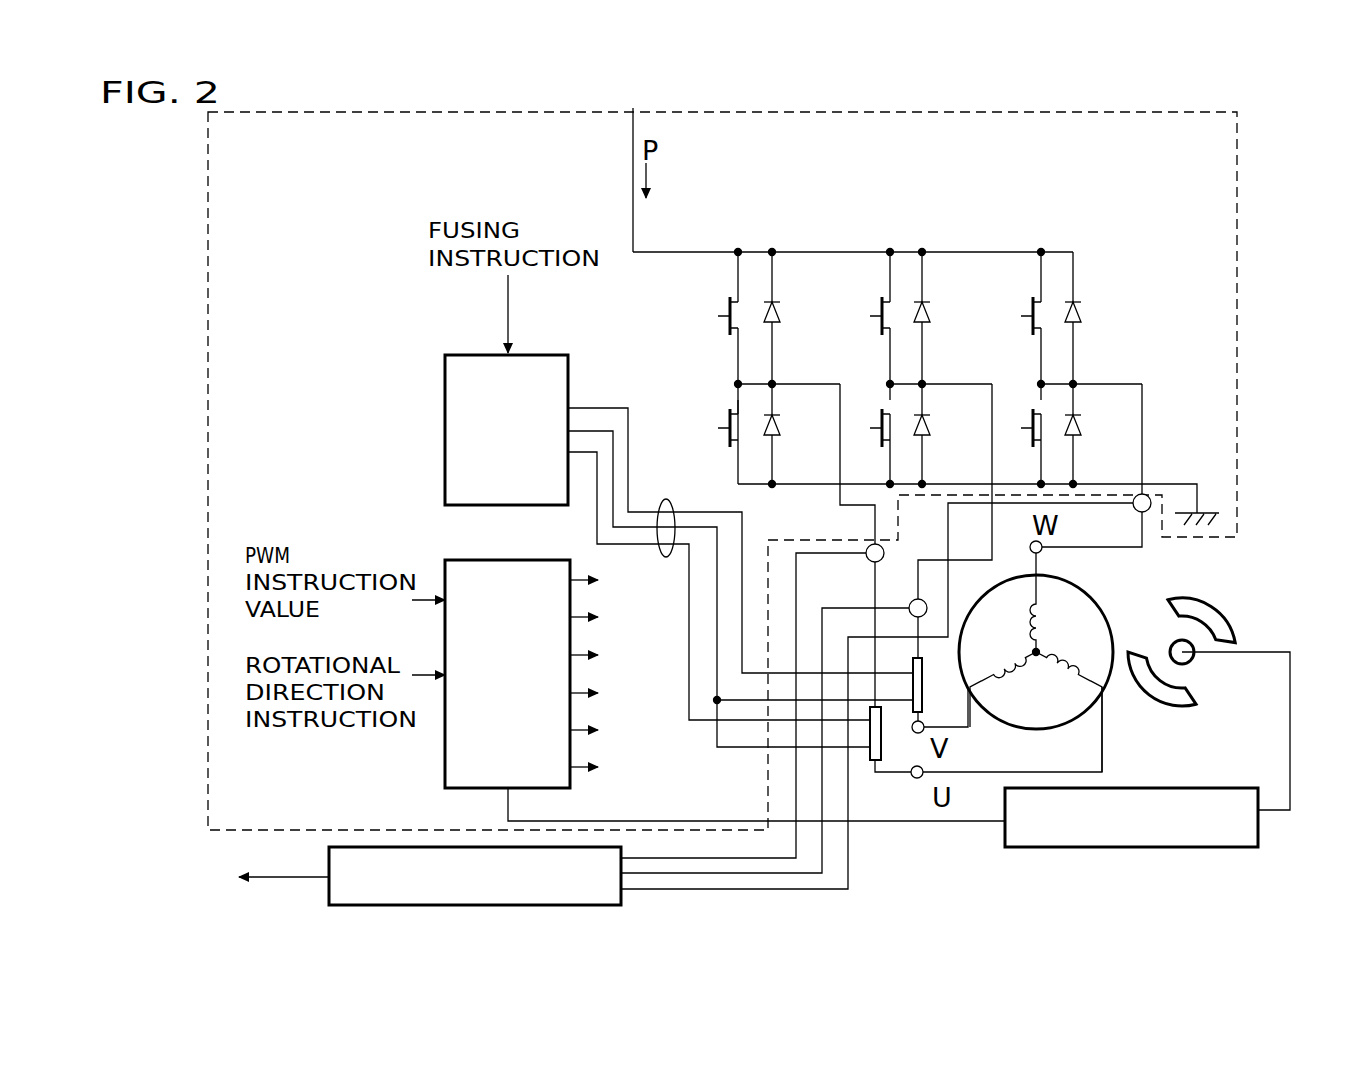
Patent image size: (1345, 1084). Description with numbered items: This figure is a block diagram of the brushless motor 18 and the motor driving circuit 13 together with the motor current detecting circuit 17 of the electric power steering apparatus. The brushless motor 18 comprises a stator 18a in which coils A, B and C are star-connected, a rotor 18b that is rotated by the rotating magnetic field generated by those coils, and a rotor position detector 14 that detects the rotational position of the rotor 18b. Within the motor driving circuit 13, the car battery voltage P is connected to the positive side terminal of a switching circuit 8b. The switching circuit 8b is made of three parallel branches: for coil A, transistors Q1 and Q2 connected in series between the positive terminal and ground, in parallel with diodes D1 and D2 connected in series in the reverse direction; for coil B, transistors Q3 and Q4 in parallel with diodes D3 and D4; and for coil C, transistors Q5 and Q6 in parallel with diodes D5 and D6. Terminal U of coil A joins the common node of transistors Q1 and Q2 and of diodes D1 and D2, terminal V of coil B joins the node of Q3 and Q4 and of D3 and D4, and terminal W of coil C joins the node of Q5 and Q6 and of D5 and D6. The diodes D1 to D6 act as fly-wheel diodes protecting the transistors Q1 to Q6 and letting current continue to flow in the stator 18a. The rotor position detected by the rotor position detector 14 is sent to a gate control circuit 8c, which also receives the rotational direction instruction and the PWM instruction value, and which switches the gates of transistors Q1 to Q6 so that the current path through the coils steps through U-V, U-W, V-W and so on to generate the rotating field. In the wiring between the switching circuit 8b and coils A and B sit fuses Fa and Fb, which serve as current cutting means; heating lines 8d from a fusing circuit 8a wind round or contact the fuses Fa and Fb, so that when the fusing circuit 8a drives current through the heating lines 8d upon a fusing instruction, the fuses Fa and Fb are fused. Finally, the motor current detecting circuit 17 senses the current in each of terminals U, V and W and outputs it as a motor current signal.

The fusing circuit 8a is at (445, 470).
The switching circuit 8b is at (926, 324).
The gate control circuit 8c is at (445, 755).
The heating lines 8d is at (672, 498).
The motor driving circuit 13 is at (1237, 246).
The rotor position detector 14 is at (1192, 788).
The motor current detecting circuit 17 is at (329, 887).
The brushless motor 18 is at (1139, 632).
The stator 18a is at (1097, 605).
The rotor 18b is at (1220, 607).
The transistor Q1 is at (728, 315).
The transistor Q2 is at (728, 427).
The transistor Q3 is at (881, 315).
The transistor Q4 is at (881, 427).
The transistor Q5 is at (1031, 315).
The transistor Q6 is at (1031, 427).
The diode D1 is at (777, 312).
The diode D2 is at (777, 425).
The diode D3 is at (927, 312).
The diode D4 is at (927, 425).
The diode D5 is at (1078, 312).
The diode D6 is at (1078, 425).
The fuse Fa is at (876, 762).
The fuse Fb is at (924, 672).